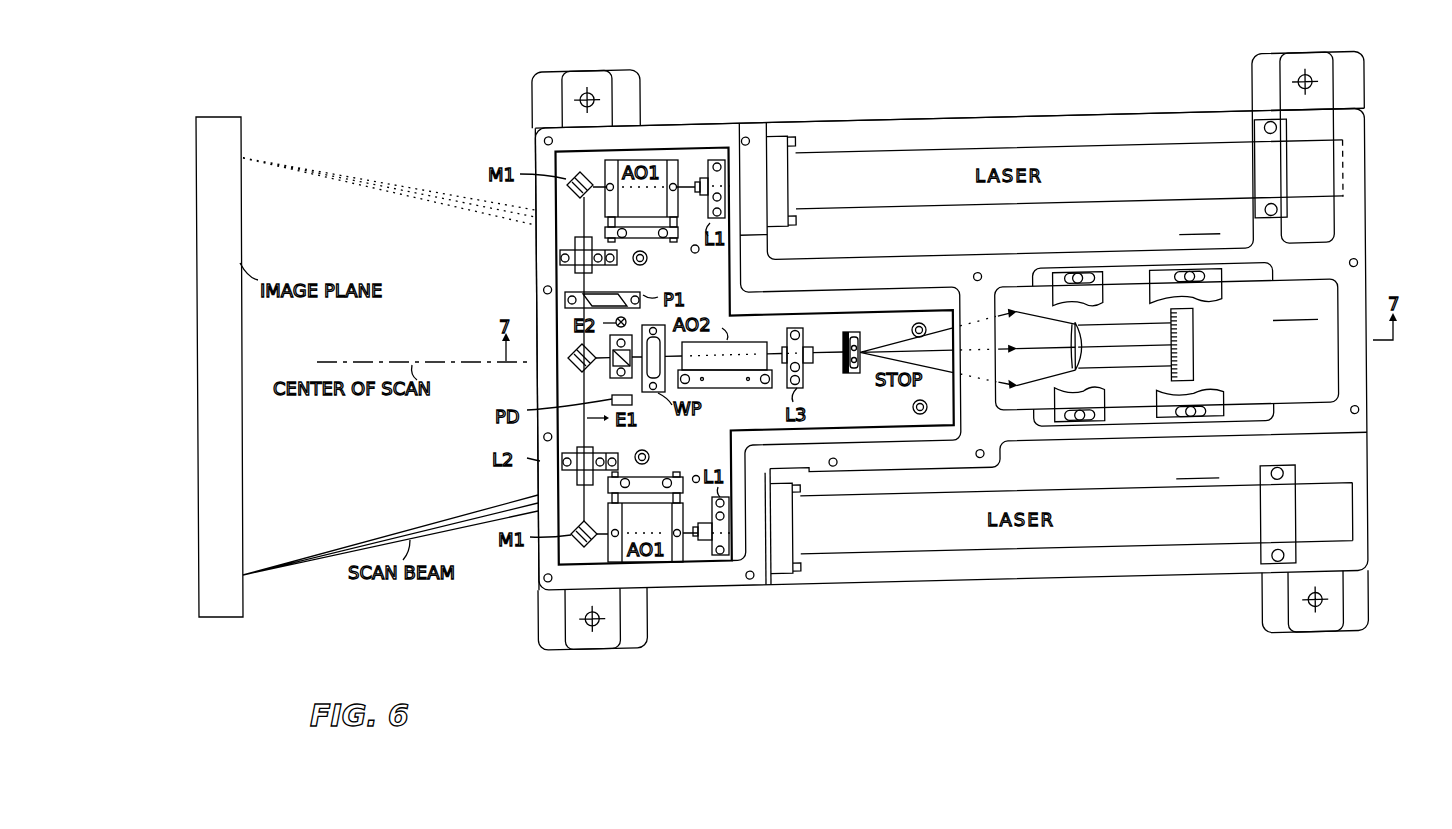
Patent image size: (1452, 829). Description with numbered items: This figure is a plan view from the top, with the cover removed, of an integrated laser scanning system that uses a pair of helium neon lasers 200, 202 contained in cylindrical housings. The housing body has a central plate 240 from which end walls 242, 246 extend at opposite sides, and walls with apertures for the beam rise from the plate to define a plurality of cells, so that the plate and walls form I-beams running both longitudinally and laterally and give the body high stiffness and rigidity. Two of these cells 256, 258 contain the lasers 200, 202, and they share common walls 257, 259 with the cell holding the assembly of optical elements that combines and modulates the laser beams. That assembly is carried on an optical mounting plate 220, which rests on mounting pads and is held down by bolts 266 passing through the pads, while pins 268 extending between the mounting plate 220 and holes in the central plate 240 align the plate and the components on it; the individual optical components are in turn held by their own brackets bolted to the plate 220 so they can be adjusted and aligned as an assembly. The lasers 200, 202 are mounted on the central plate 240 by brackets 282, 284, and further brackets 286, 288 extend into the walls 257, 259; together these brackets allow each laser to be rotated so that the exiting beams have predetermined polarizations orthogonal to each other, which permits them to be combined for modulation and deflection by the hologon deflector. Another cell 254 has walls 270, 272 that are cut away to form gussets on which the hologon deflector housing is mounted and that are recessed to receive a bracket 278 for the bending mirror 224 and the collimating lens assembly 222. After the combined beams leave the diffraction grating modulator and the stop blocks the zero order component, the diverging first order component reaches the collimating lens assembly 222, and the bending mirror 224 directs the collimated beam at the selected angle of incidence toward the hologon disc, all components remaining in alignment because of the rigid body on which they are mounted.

The laser 200 is at (835, 148).
The laser 202 is at (855, 493).
The optical mounting plate (OMP) 220 is at (565, 240).
The collimating lens assembly 222 is at (1073, 355).
The bending mirror 224 is at (1193, 342).
The central plate 240 is at (1058, 118).
The end wall 242 is at (538, 573).
The end wall 246 is at (1367, 412).
The cell 254 is at (1167, 344).
The cell 256 is at (1199, 223).
The common wall 257 is at (757, 238).
The cell 258 is at (1197, 467).
The common wall 259 is at (763, 553).
The bolts 266 is at (645, 254).
The pins 268 is at (698, 252).
The wall 270 is at (1027, 257).
The wall 272 is at (1070, 432).
The bracket 278 is at (1057, 305).
The bracket 282 is at (1257, 162).
The bracket 284 is at (1260, 517).
The bracket 286 is at (782, 138).
The bracket 288 is at (793, 535).